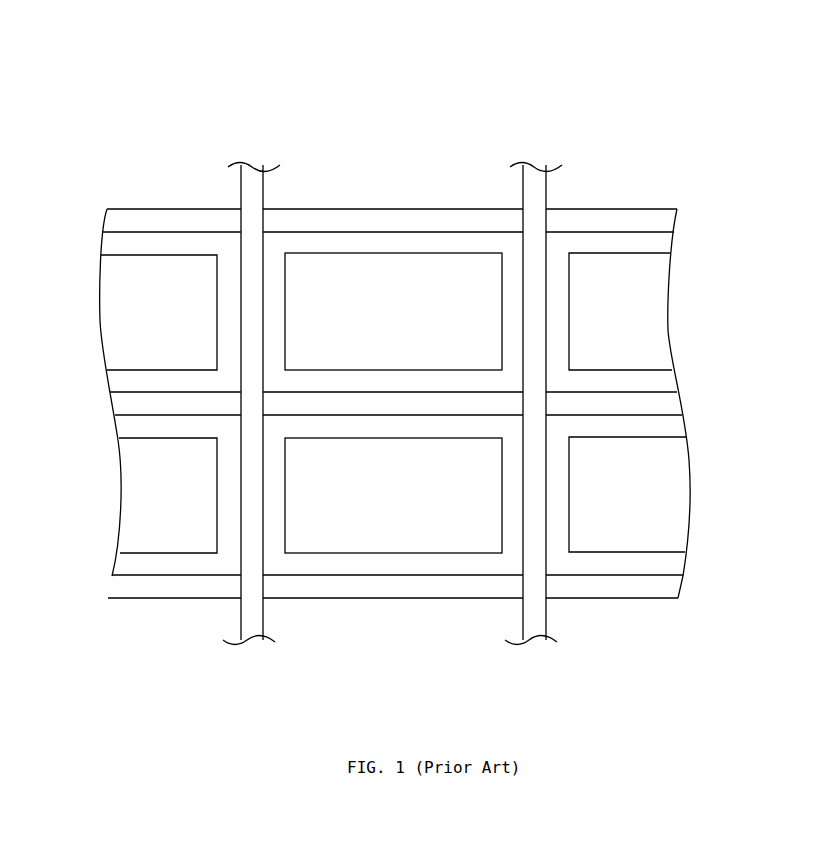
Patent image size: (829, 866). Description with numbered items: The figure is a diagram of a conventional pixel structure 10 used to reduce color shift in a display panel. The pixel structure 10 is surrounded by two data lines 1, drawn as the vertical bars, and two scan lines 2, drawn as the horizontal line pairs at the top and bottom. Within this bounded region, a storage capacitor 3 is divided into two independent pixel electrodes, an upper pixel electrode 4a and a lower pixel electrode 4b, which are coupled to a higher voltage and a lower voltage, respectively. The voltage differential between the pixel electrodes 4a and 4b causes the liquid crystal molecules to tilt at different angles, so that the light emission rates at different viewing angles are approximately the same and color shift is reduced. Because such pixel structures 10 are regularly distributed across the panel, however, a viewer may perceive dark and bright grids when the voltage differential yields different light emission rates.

The pixel structure 10 is at (90, 33).
The data lines 1 is at (535, 157).
The scan lines 2 is at (108, 218).
The storage capacitor 3 is at (112, 400).
The pixel electrode 4a is at (393, 260).
The pixel electrode 4b is at (393, 545).